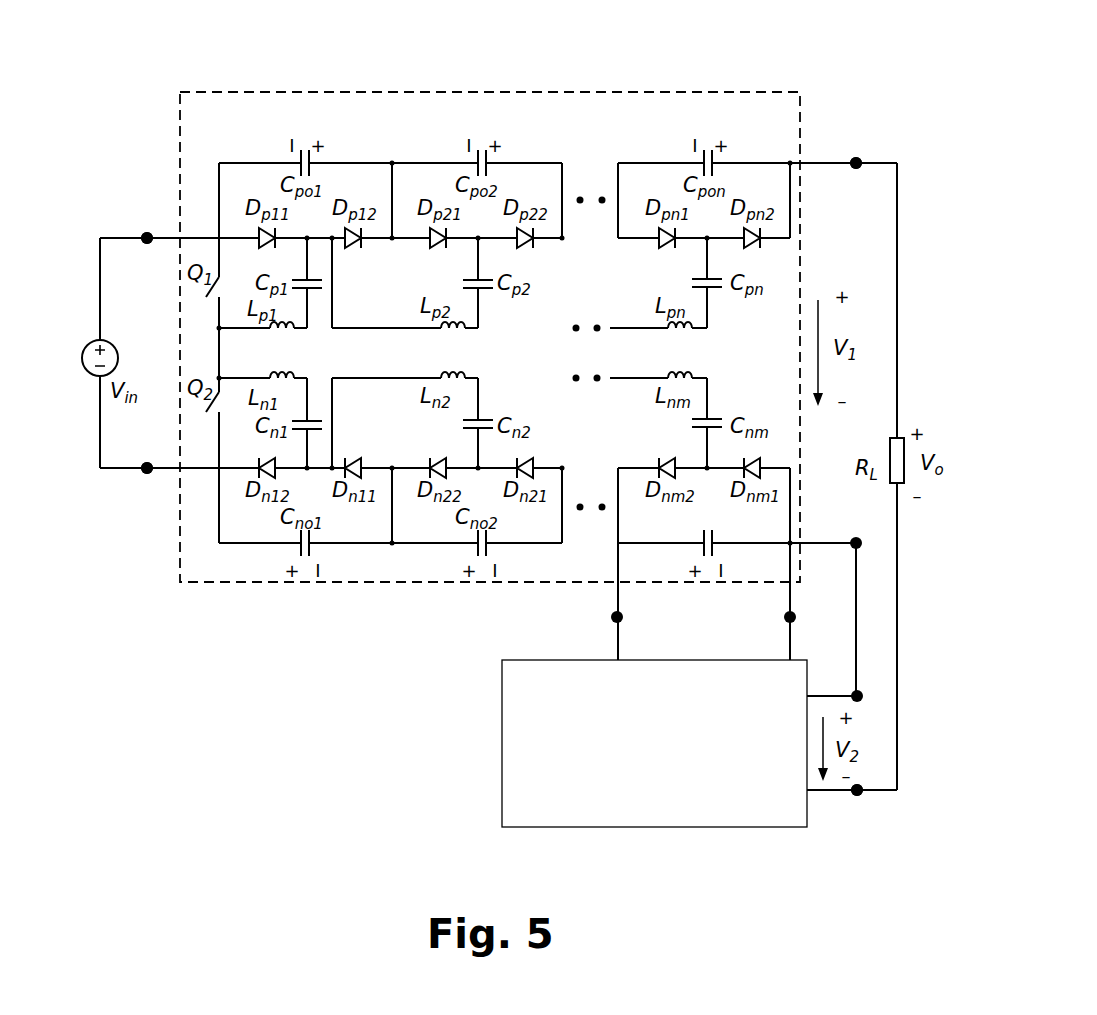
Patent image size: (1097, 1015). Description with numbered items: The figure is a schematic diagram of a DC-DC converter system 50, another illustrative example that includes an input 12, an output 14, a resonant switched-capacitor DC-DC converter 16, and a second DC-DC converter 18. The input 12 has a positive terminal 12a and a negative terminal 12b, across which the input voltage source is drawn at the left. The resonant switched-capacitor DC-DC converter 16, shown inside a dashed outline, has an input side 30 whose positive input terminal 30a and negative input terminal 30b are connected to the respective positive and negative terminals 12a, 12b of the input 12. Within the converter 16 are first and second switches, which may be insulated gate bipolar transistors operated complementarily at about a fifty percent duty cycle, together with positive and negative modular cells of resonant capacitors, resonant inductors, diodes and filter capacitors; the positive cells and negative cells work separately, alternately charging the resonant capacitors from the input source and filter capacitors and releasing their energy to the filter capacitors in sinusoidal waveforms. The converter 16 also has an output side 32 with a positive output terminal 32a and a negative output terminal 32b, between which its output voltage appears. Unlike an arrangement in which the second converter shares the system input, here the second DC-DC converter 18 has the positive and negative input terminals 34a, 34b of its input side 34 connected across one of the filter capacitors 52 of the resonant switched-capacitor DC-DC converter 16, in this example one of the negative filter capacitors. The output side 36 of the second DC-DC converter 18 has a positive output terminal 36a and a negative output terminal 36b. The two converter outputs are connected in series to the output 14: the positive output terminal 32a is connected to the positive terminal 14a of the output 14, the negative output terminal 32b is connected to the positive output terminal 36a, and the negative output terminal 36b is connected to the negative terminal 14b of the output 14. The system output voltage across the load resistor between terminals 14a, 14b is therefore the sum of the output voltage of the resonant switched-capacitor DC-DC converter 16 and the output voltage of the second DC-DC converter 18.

The DC-DC converter system 50 is at (104, 90).
The resonant switched-capacitor DC-DC converter 16 is at (250, 92).
The input 12 is at (93, 247).
The positive terminal 12a is at (147, 243).
The negative terminal 12b is at (147, 471).
The input side 30 is at (168, 206).
The positive input terminal 30a is at (147, 236).
The negative input terminal 30b is at (147, 474).
The output side 32 is at (814, 139).
The positive output terminal 32a is at (856, 168).
The negative output terminal 32b is at (856, 540).
The output 14 is at (924, 195).
The positive terminal 14a is at (856, 161).
The negative terminal 14b is at (860, 794).
The input side 34 is at (599, 652).
The positive input terminal 34a is at (619, 620).
The negative input terminal 34b is at (788, 617).
The output side 36 is at (813, 808).
The positive output terminal 36a is at (856, 694).
The negative output terminal 36b is at (857, 795).
The filter capacitor 52 is at (696, 536).
The second DC-DC converter 18 is at (641, 810).